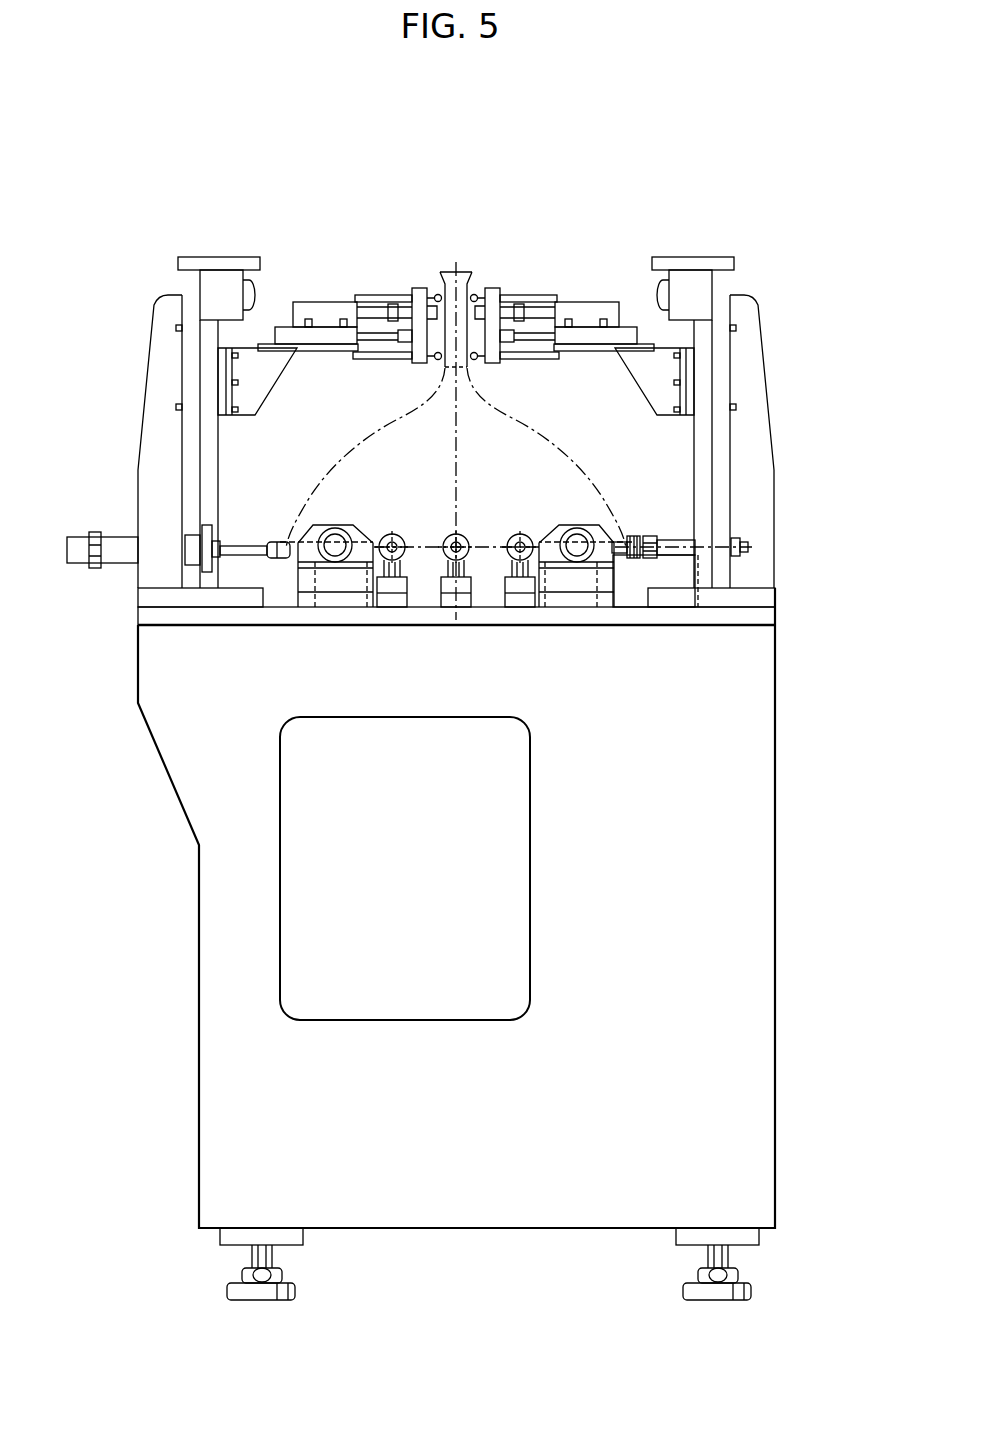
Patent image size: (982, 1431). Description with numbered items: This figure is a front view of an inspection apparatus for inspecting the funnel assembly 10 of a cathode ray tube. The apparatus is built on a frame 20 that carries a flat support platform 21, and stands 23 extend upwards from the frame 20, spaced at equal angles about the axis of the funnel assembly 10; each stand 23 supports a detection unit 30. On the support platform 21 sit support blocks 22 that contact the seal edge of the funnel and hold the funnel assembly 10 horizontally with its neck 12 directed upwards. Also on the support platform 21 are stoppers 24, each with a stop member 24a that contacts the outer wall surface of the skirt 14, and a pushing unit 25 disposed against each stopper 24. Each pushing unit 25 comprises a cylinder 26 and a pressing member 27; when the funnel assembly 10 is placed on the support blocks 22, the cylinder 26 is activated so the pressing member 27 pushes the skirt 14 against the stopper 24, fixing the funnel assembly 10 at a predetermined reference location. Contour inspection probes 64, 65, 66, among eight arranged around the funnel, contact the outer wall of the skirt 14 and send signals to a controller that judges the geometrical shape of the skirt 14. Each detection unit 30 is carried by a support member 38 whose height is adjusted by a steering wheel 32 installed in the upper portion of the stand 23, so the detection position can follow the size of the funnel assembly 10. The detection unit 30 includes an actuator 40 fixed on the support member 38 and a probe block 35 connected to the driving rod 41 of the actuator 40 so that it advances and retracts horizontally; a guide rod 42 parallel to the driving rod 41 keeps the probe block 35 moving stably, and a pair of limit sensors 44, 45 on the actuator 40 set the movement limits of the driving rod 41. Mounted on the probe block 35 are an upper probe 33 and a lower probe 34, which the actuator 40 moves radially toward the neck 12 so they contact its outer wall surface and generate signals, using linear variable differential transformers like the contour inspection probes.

The funnel assembly 10 is at (306, 463).
The neck 12 is at (445, 284).
The skirt 14 is at (490, 565).
The frame 20 is at (758, 847).
The support platform 21 is at (393, 612).
The support block 22 is at (285, 597).
The stand 23 is at (152, 380).
The stopper 24 is at (752, 547).
The stop member 24a is at (632, 545).
The pushing unit 25 is at (362, 562).
The cylinder 26 is at (120, 537).
The pressing member 27 is at (275, 545).
The detection unit 30 is at (508, 192).
The steering wheel 32 is at (728, 257).
The upper probe 33 is at (428, 297).
The lower probe 34 is at (437, 362).
The probe block 35 is at (530, 308).
The support member 38 is at (645, 395).
The actuator 40 is at (612, 335).
The driving rod 41 is at (543, 338).
The guide rod 42 is at (555, 308).
The limit sensor 44 is at (308, 319).
The limit sensor 45 is at (343, 319).
The contour inspection probe 64 is at (540, 590).
The contour inspection probe 65 is at (468, 588).
The contour inspection probe 66 is at (405, 588).